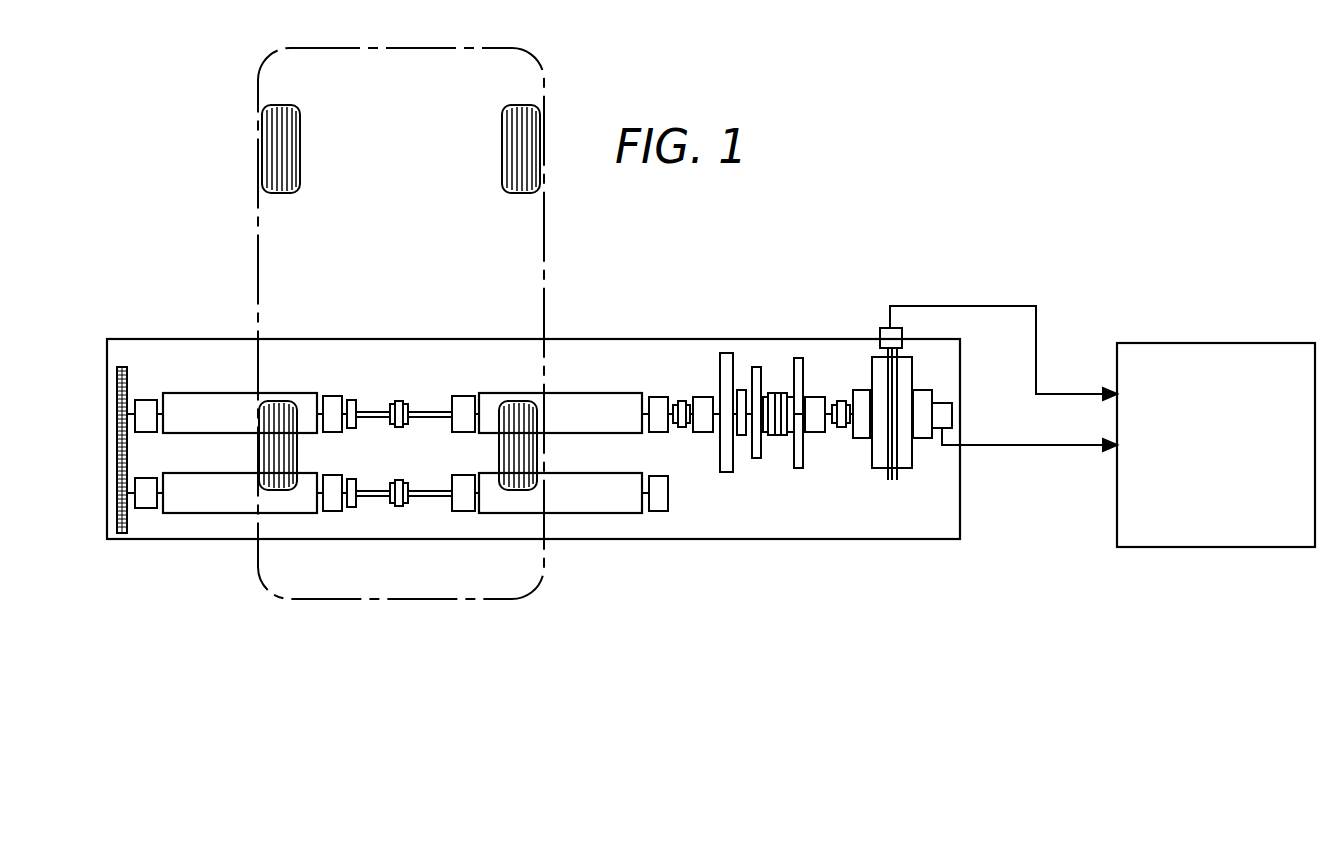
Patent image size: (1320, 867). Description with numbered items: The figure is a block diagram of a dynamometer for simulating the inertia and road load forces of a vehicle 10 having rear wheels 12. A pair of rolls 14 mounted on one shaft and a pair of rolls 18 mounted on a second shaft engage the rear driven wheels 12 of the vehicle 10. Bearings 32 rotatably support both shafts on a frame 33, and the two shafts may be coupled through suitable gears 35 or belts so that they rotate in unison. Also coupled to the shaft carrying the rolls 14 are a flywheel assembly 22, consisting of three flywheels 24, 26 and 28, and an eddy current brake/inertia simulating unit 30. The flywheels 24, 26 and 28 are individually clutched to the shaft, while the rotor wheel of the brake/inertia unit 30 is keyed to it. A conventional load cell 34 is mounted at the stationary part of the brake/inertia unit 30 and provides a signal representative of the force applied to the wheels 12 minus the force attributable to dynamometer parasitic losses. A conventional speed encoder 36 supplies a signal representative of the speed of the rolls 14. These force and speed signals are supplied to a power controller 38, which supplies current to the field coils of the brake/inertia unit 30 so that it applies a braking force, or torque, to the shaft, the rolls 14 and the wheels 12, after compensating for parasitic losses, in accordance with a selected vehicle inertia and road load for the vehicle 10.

The vehicle 10 is at (543, 57).
The rear wheels 12 is at (275, 401).
The rolls 14 is at (202, 393).
The rolls 18 is at (207, 513).
The flywheel assembly 22 is at (771, 397).
The flywheel 24 is at (728, 472).
The flywheel 26 is at (756, 458).
The flywheel 28 is at (798, 468).
The eddy current brake/inertia simulating unit 30 is at (912, 460).
The bearings 32 is at (140, 398).
The frame 33 is at (755, 540).
The load cell 34 is at (882, 328).
The gears 35 is at (117, 488).
The speed encoder 36 is at (952, 413).
The power controller 38 is at (1218, 343).